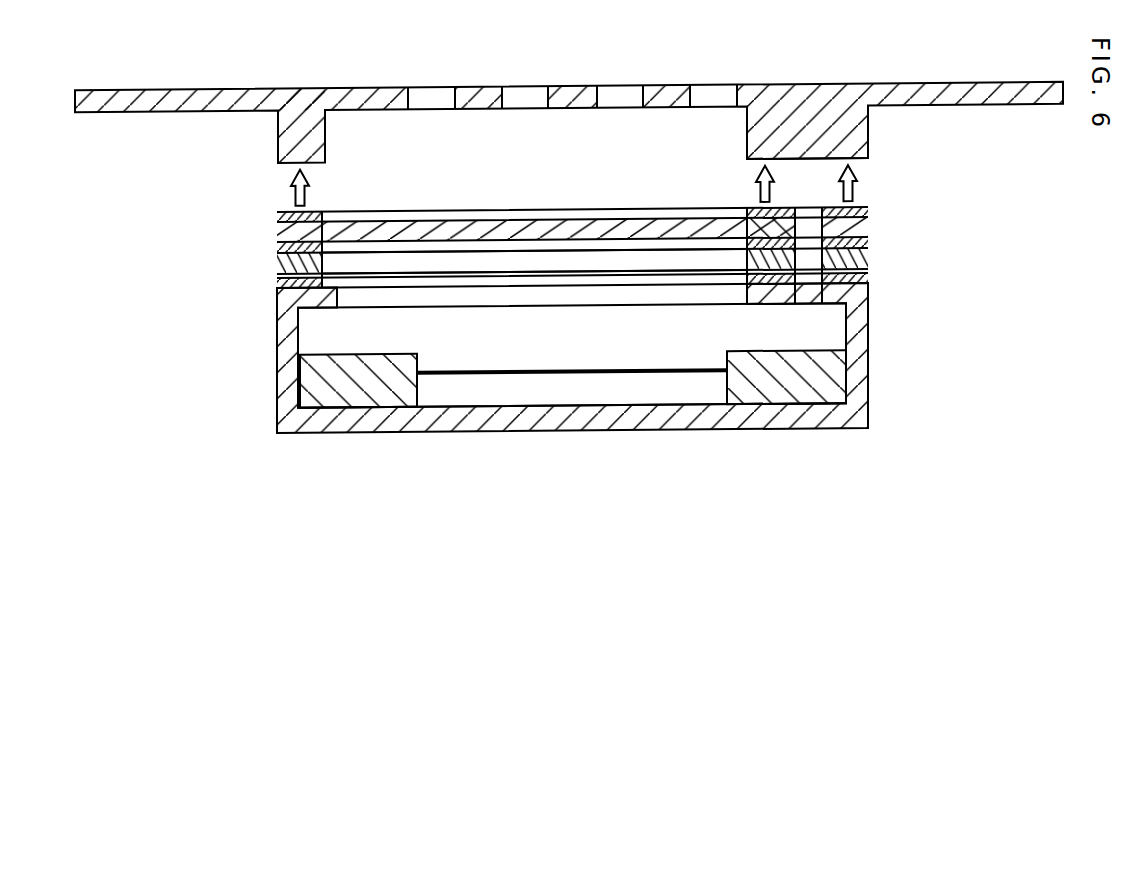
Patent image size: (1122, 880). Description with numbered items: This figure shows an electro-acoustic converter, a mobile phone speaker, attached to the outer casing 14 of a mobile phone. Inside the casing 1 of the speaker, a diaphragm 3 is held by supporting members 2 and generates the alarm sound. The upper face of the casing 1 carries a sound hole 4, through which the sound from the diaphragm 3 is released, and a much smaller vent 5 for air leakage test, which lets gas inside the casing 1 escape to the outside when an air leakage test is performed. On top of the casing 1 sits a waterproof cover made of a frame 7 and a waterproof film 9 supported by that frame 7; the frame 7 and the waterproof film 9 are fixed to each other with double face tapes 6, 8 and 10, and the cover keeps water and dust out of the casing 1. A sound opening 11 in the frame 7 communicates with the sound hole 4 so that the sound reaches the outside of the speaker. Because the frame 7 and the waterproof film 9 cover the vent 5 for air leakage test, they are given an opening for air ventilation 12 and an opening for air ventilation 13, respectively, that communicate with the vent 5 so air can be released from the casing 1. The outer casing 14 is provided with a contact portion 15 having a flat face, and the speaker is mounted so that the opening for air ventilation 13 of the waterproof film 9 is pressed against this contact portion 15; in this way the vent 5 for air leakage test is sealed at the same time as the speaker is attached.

The casing 1 is at (855, 330).
The supporting members 2 is at (794, 398).
The diaphragm 3 is at (643, 375).
The sound hole 4 is at (440, 298).
The vent for air leakage test 5 is at (745, 212).
The double face tape 6 is at (868, 272).
The frame 7 is at (868, 253).
The double face tape 8 is at (868, 238).
The waterproof film 9 is at (868, 227).
The double face tape 10 is at (860, 206).
The sound opening 11 is at (483, 263).
The opening for air ventilation 12 is at (805, 287).
The opening for air ventilation 13 is at (822, 210).
The outer casing 14 is at (932, 84).
The contact portion 15 is at (812, 224).